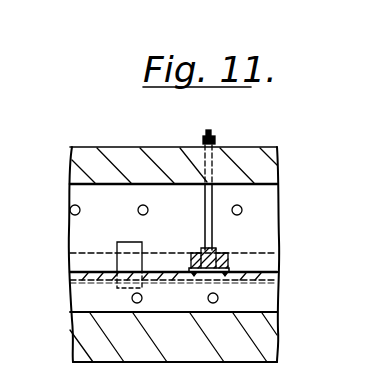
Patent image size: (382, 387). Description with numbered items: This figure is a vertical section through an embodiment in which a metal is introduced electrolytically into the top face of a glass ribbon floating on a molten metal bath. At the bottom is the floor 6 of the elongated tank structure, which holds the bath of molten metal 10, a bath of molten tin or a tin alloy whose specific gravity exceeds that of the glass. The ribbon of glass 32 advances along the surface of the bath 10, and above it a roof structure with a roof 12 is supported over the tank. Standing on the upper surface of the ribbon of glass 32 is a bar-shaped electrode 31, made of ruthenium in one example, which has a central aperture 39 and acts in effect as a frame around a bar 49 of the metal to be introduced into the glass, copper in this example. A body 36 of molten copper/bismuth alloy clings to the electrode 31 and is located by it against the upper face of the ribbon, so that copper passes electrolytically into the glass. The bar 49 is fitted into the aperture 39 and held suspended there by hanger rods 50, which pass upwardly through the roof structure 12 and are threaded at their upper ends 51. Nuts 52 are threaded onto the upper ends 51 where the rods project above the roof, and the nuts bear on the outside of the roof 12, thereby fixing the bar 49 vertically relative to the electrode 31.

The floor 6 is at (77, 330).
The bath of molten metal 10 is at (74, 302).
The roof 12 is at (113, 158).
The bar-shaped electrode 31 is at (197, 258).
The ribbon of glass 32 is at (74, 271).
The body of molten material 36 is at (225, 273).
The central aperture 39 is at (195, 273).
The bar 49 is at (215, 253).
The hanger rods 50 is at (205, 226).
The threaded upper ends 51 is at (203, 137).
The nuts 52 is at (214, 143).